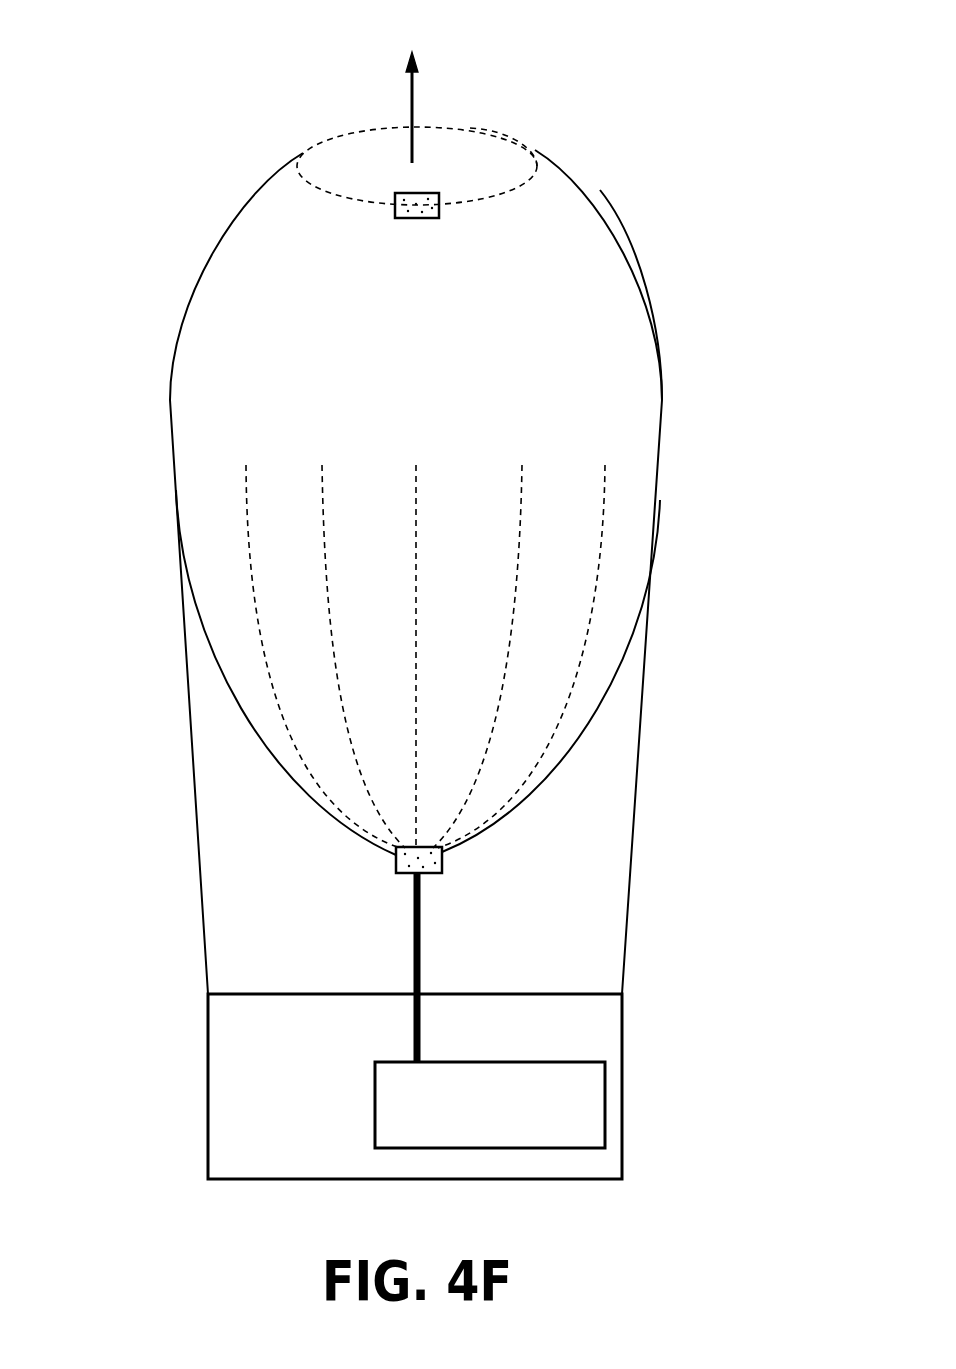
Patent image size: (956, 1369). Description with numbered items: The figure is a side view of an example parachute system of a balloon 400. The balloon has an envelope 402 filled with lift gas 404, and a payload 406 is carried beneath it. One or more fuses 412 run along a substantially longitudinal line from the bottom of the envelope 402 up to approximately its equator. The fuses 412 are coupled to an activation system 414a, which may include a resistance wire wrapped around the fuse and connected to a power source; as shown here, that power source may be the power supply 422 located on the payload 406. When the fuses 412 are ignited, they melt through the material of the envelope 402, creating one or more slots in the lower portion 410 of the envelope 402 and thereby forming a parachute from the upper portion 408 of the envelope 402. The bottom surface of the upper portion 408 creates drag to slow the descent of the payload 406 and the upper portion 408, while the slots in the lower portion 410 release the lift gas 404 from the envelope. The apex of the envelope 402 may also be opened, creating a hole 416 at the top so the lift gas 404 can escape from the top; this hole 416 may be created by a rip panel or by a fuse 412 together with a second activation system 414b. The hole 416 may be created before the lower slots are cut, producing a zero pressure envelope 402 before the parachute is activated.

The balloon 400 is at (704, 97).
The envelope 402 is at (203, 243).
The lift gas 404 is at (415, 93).
The payload 406 is at (208, 1090).
The upper portion of the envelope 408 is at (630, 248).
The lower portion of the envelope 410 is at (530, 805).
The fuses 412 is at (340, 140).
The activation system 414a is at (393, 872).
The second activation system 414b is at (393, 216).
The hole 416 is at (480, 147).
The power supply 422 is at (373, 1108).